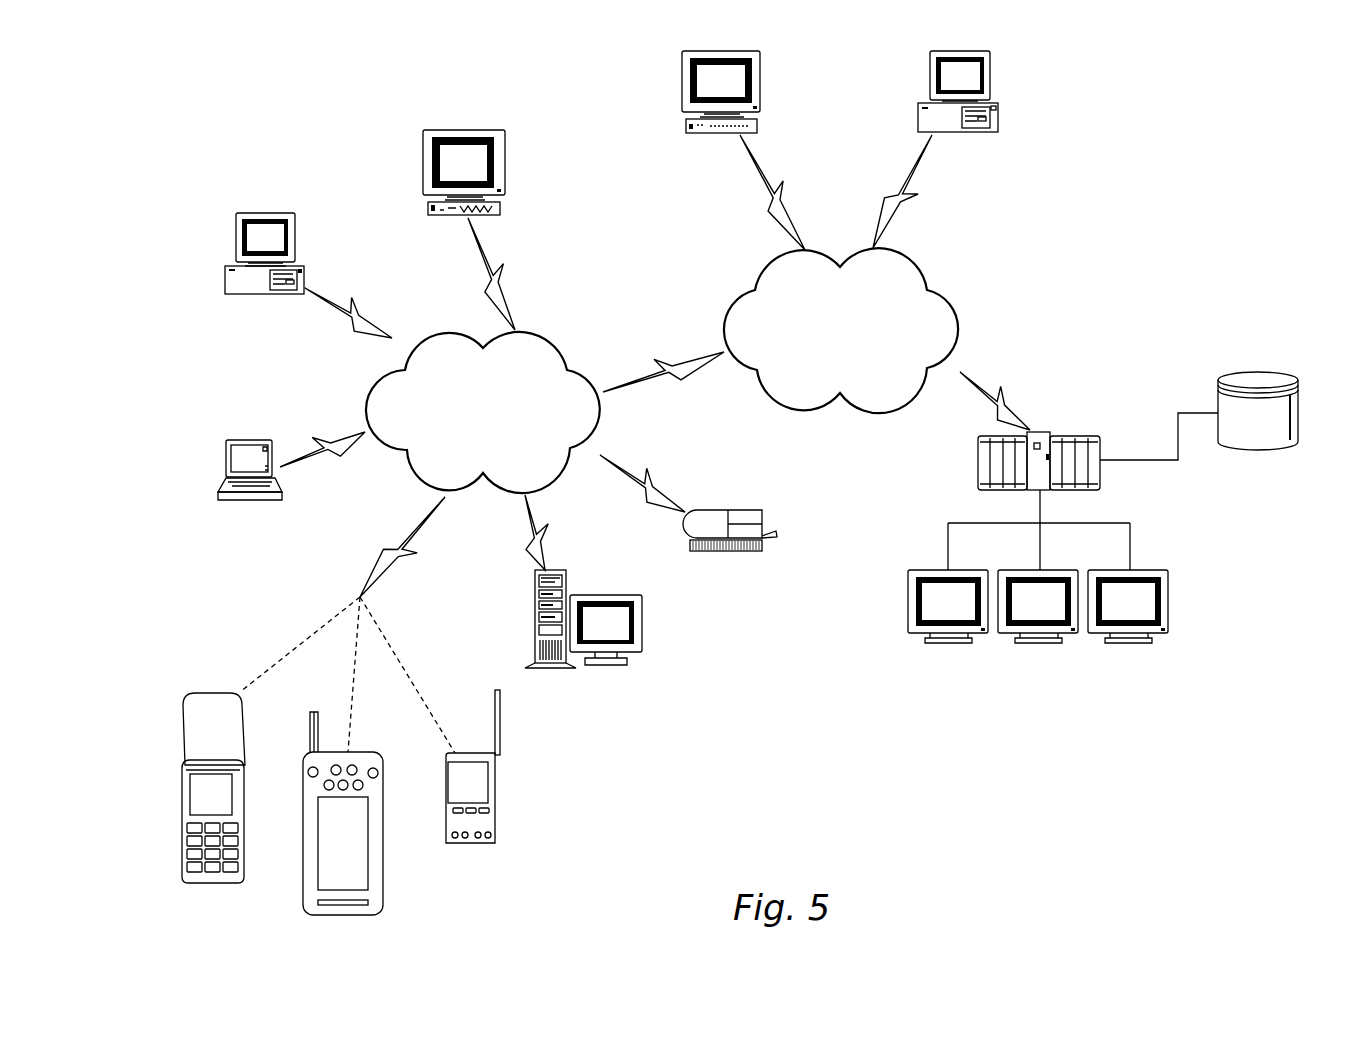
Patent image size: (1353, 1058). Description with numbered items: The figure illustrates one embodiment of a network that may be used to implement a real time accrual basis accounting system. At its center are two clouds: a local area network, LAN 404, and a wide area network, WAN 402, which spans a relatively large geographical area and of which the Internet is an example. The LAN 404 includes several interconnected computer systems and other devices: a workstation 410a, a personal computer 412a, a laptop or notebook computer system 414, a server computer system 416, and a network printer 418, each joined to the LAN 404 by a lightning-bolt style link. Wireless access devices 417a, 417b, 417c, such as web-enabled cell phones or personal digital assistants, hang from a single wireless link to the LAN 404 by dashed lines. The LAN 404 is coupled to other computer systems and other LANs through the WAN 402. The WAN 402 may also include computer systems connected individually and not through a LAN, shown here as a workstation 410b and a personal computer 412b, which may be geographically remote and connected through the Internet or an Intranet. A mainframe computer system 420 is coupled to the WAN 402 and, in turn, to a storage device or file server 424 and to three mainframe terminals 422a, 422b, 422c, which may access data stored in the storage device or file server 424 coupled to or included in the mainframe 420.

The wide area network 402 is at (863, 378).
The local area network 404 is at (507, 456).
The workstation 410a is at (486, 217).
The workstation 410b is at (700, 134).
The personal computer 412a is at (265, 294).
The personal computer 412b is at (978, 133).
The laptop or notebook computer system 414 is at (250, 500).
The server computer system 416 is at (605, 668).
The wireless access device 417a is at (205, 885).
The wireless access device 417b is at (340, 915).
The wireless access device 417c is at (470, 845).
The network printer 418 is at (730, 552).
The mainframe computer system 420 is at (1070, 432).
The mainframe terminal 422a is at (948, 645).
The mainframe terminal 422b is at (1040, 645).
The mainframe terminal 422c is at (1130, 645).
The storage device or file server 424 is at (1280, 450).